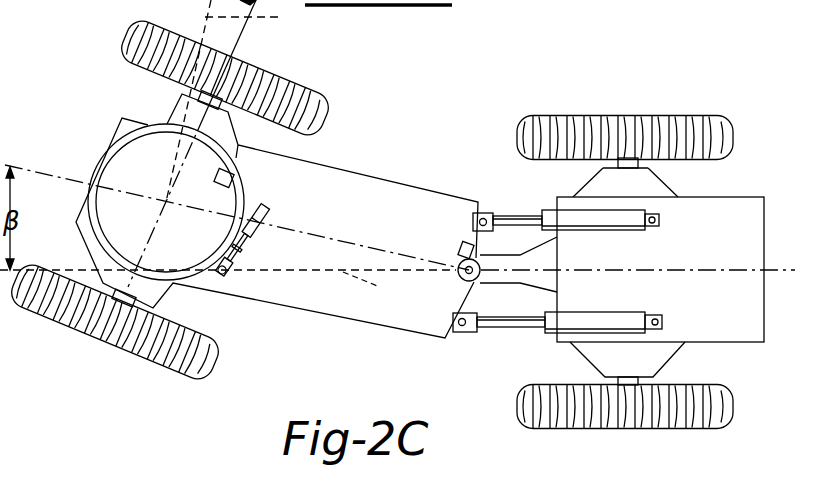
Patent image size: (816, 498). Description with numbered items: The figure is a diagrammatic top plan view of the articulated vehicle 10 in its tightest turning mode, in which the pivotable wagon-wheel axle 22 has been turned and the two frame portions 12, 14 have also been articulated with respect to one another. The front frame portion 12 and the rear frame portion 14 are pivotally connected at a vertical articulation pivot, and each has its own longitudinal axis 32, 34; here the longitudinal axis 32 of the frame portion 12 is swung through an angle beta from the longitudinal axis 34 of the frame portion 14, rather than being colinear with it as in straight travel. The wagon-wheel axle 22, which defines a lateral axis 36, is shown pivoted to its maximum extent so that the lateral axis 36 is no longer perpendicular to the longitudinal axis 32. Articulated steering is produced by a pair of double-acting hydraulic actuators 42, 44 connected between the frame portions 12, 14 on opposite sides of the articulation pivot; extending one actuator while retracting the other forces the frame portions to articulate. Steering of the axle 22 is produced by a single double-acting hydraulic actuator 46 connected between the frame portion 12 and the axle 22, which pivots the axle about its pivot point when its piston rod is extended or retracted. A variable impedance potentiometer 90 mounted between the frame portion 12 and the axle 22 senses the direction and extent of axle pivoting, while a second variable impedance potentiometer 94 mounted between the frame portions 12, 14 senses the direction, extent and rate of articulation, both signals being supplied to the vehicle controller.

The articulated vehicle 10 is at (415, 148).
The frame portion 12 is at (378, 326).
The frame portion 14 is at (737, 340).
The wagon-wheel axle 22 is at (173, 110).
The longitudinal axis 32 is at (367, 250).
The longitudinal axis 34 is at (675, 272).
The lateral axis 36 is at (245, 32).
The double-acting hydraulic actuator 42 is at (610, 231).
The double-acting hydraulic actuator 44 is at (600, 320).
The double-acting hydraulic actuator 46 is at (280, 212).
The variable impedance potentiometer 90 is at (235, 178).
The variable impedance potentiometer 94 is at (461, 243).